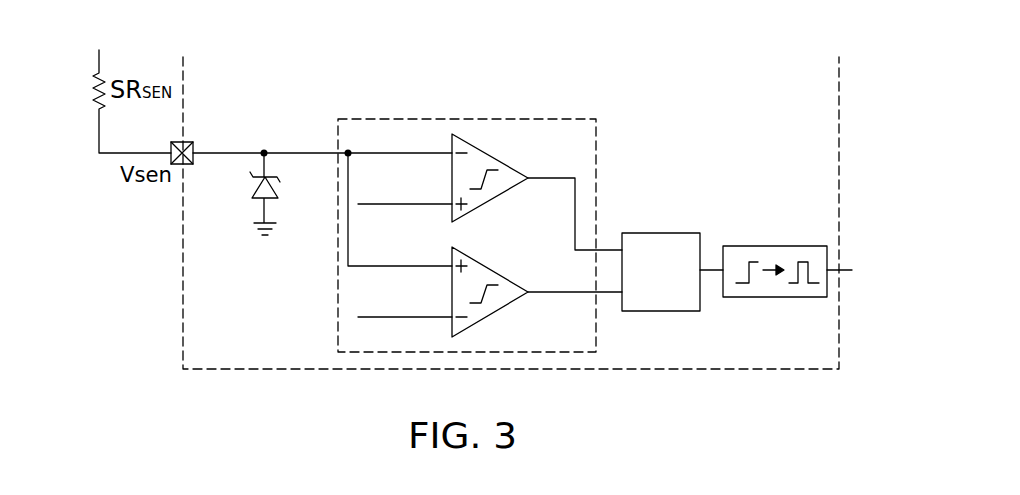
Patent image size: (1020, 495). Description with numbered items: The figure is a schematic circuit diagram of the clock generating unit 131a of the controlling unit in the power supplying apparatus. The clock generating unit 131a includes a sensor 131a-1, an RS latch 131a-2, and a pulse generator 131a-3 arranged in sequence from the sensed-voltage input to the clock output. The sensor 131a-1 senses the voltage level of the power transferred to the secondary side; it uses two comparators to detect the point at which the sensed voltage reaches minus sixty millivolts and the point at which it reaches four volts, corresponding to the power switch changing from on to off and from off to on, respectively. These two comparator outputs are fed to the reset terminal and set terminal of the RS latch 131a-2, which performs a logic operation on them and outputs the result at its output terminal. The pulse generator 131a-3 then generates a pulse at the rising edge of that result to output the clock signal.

The clock generating unit 131a is at (592, 57).
The sensor 131a-1 is at (465, 117).
The RS latch 131a-2 is at (660, 233).
The pulse generator 131a-3 is at (773, 246).